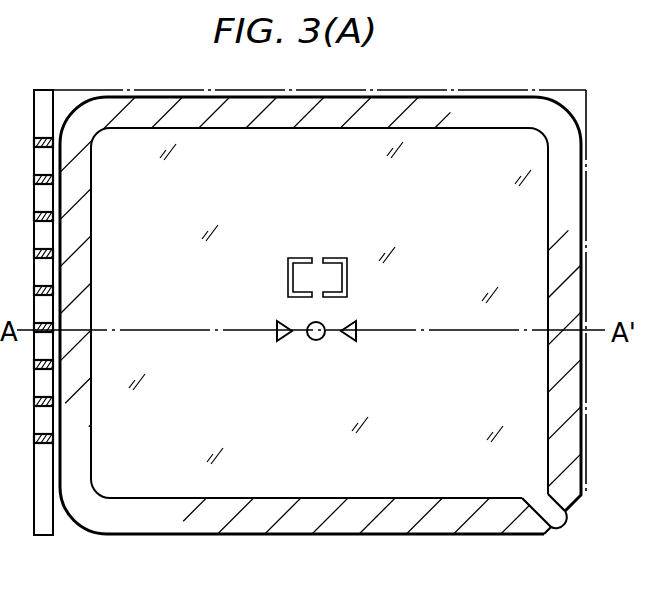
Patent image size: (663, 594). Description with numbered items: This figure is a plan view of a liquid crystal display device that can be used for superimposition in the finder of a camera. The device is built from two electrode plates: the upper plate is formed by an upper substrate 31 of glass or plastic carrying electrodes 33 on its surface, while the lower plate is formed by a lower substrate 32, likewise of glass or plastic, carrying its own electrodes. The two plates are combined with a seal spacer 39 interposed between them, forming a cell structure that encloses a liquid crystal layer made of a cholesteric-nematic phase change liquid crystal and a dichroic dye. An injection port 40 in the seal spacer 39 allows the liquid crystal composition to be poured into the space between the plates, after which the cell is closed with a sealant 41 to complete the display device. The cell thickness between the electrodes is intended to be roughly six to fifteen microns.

The upper substrate 31 is at (575, 100).
The lower substrate 32 is at (43, 102).
The electrodes 33 is at (277, 329).
The seal spacer 39 is at (497, 517).
The injection port 40 is at (568, 516).
The sealant 41 is at (561, 526).